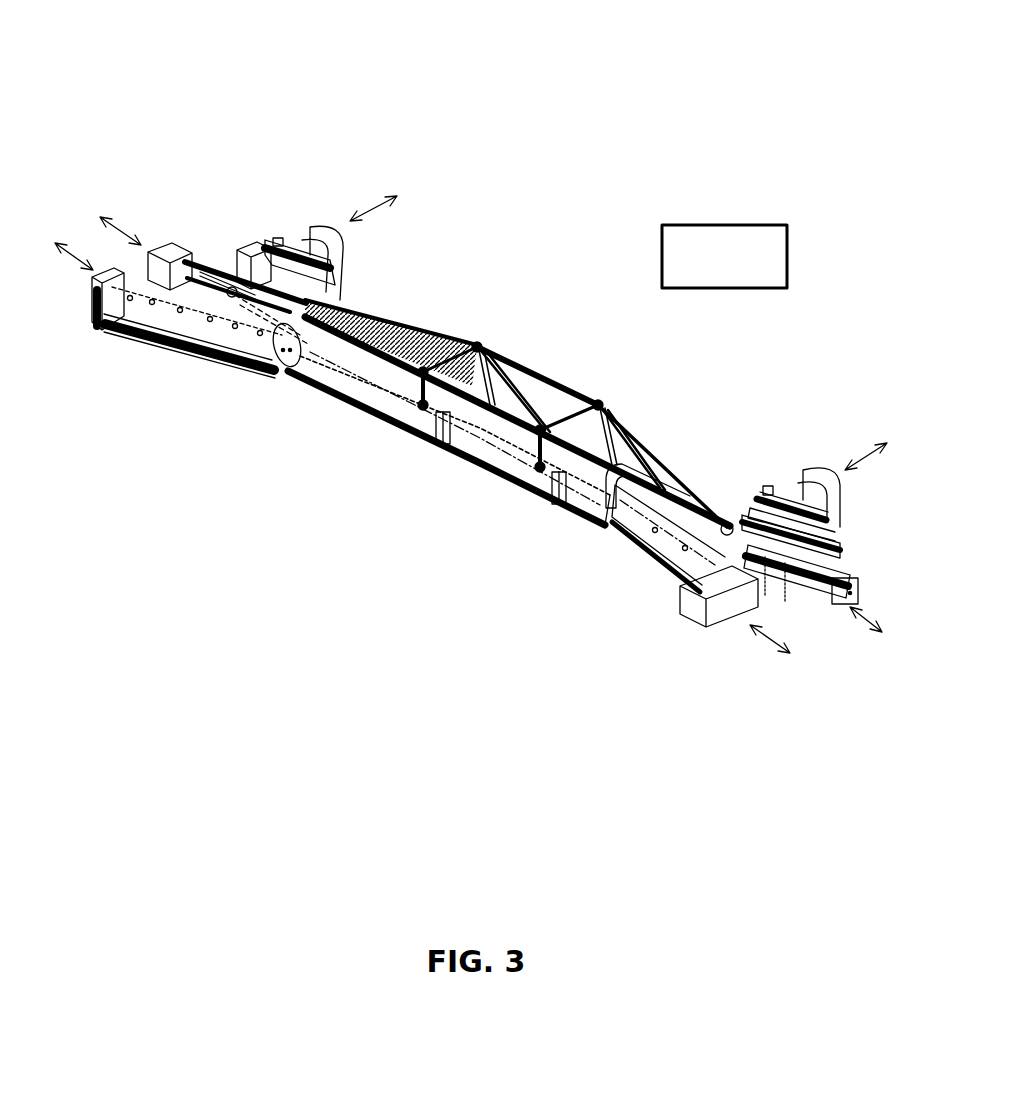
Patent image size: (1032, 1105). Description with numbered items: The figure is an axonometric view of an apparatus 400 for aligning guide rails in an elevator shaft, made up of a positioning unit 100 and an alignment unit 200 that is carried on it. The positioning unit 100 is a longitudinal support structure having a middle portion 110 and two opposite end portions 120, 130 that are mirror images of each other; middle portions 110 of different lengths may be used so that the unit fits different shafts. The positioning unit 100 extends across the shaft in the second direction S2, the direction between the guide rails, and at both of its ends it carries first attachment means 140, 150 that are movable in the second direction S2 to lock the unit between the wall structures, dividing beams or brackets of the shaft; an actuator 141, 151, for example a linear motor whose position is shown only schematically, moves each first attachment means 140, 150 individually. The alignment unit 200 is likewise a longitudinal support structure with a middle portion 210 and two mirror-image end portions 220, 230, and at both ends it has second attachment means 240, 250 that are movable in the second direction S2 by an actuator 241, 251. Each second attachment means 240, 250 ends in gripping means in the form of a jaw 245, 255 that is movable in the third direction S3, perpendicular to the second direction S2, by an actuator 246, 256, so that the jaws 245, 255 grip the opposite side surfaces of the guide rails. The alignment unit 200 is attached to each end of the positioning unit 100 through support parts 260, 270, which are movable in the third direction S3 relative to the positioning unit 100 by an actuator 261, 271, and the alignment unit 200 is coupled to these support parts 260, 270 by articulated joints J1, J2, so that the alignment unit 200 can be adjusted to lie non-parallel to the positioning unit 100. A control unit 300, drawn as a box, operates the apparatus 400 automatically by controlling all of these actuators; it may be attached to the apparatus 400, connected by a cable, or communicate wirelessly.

The positioning unit 100 is at (377, 499).
The middle portion 110 is at (487, 448).
The end portion 120 is at (587, 511).
The end portion 130 is at (352, 388).
The first attachment means 140 is at (834, 577).
The actuator 141 is at (720, 485).
The first attachment means 150 is at (167, 263).
The actuator 151 is at (250, 273).
The alignment unit 200 is at (536, 288).
The middle portion 210 is at (523, 380).
The end portion 220 is at (647, 467).
The end portion 230 is at (368, 328).
The second attachment means 240 is at (672, 560).
The actuator 241 is at (637, 510).
The jaw 245 is at (712, 612).
The actuator 246 is at (834, 533).
The second attachment means 250 is at (173, 318).
The actuator 251 is at (260, 325).
The jaw 255 is at (92, 322).
The actuator 256 is at (242, 252).
The support part 260 is at (818, 520).
The actuator 261 is at (792, 482).
The support part 270 is at (312, 287).
The actuator 271 is at (299, 238).
The control unit 300 is at (704, 271).
The apparatus for aligning guide rails 400 is at (579, 97).
The articulated joint J1 is at (737, 516).
The articulated joint J2 is at (232, 277).
The second direction S2 is at (136, 236).
The third direction S3 is at (355, 217).